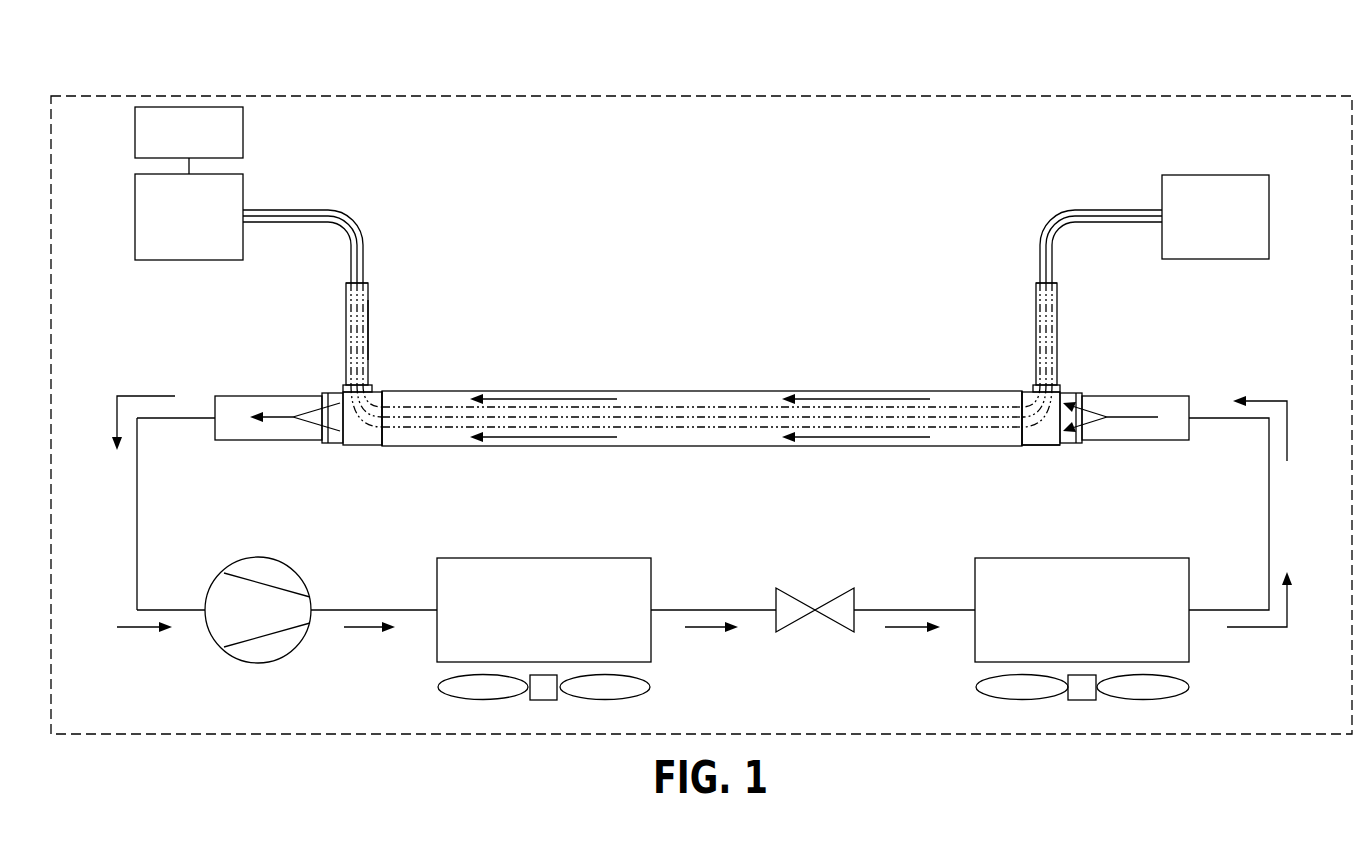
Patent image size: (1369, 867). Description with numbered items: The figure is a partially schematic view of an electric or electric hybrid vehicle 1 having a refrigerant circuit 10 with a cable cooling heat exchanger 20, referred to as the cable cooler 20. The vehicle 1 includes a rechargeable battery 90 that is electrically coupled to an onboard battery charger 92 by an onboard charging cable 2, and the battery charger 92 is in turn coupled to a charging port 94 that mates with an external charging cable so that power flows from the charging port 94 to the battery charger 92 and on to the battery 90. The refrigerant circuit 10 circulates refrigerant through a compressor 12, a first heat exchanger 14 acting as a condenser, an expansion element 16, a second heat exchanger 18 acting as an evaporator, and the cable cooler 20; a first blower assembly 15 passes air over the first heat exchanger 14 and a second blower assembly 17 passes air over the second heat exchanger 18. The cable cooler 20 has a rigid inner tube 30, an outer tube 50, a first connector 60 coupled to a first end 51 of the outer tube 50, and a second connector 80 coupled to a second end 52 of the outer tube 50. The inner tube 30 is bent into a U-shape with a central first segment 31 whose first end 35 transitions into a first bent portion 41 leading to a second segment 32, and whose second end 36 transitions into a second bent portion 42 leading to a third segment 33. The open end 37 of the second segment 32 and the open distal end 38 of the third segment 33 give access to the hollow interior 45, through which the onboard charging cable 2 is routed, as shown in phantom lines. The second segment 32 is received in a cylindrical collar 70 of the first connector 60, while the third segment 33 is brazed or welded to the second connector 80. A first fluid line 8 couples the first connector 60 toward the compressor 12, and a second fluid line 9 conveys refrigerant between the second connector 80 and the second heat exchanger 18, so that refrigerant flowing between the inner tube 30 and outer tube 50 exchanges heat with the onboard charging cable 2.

The electric or electric hybrid vehicle 1 is at (1250, 96).
The onboard charging cable 2 is at (352, 218).
The first fluid line 8 is at (270, 395).
The second fluid line 9 is at (1135, 395).
The refrigerant circuit 10 is at (150, 527).
The compressor 12 is at (242, 620).
The first heat exchanger 14 is at (524, 620).
The first blower assembly 15 is at (438, 688).
The expansion element 16 is at (815, 608).
The second blower assembly 17 is at (976, 688).
The second heat exchanger 18 is at (1066, 620).
The cable cooling heat exchanger 20 is at (1075, 377).
The inner tube 30 is at (336, 327).
The first segment 31 is at (657, 407).
The second segment 32 is at (369, 325).
The third segment 33 is at (1034, 325).
The first end 35 is at (384, 407).
The second end 36 is at (1020, 407).
The end 37 is at (369, 282).
The distal end 38 is at (1036, 282).
The first bent portion 41 is at (363, 423).
The second bent portion 42 is at (1040, 423).
The hollow interior 45 is at (695, 428).
The outer tube 50 is at (552, 391).
The first end 51 is at (385, 447).
The second end 52 is at (1017, 447).
The first connector 60 is at (367, 447).
The cylindrical collar 70 is at (343, 388).
The second connector 80 is at (1035, 447).
The rechargeable battery 90 is at (1200, 231).
The onboard battery charger 92 is at (173, 231).
The charging port 94 is at (173, 144).